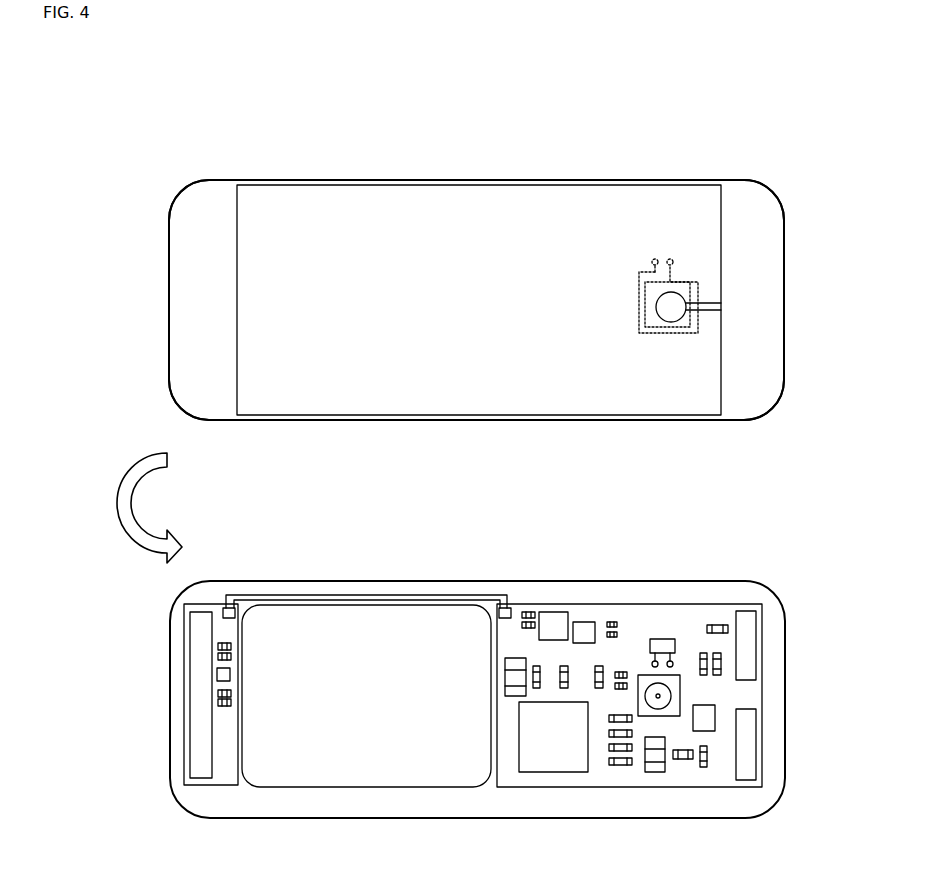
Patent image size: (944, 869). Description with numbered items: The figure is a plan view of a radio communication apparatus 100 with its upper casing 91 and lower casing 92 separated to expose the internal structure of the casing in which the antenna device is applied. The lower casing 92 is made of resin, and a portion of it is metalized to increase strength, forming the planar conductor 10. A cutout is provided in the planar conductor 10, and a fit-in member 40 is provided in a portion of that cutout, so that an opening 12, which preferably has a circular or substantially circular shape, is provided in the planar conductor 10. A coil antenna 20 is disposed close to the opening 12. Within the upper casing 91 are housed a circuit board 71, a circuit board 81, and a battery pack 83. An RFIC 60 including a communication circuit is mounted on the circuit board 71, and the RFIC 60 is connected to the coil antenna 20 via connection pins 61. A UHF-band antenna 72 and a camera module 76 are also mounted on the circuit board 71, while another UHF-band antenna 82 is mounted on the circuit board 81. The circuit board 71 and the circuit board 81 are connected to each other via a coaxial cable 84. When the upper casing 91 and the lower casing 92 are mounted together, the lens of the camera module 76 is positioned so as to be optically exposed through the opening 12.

The radio communication apparatus 100 is at (326, 158).
The planar conductor 10 is at (628, 196).
The lower casing 92 is at (773, 191).
The coil antenna 20 is at (703, 278).
The fit-in member 40 is at (721, 305).
The opening 12 is at (677, 314).
The upper casing 91 is at (771, 590).
The circuit board 81 is at (227, 781).
The UHF-band antenna 82 is at (197, 650).
The battery pack 83 is at (365, 770).
The coaxial cable 84 is at (361, 594).
The circuit board 71 is at (606, 789).
The UHF-band antenna 72 is at (752, 652).
The RFIC 60 is at (653, 639).
The connection pins 61 is at (653, 660).
The camera module 76 is at (682, 691).